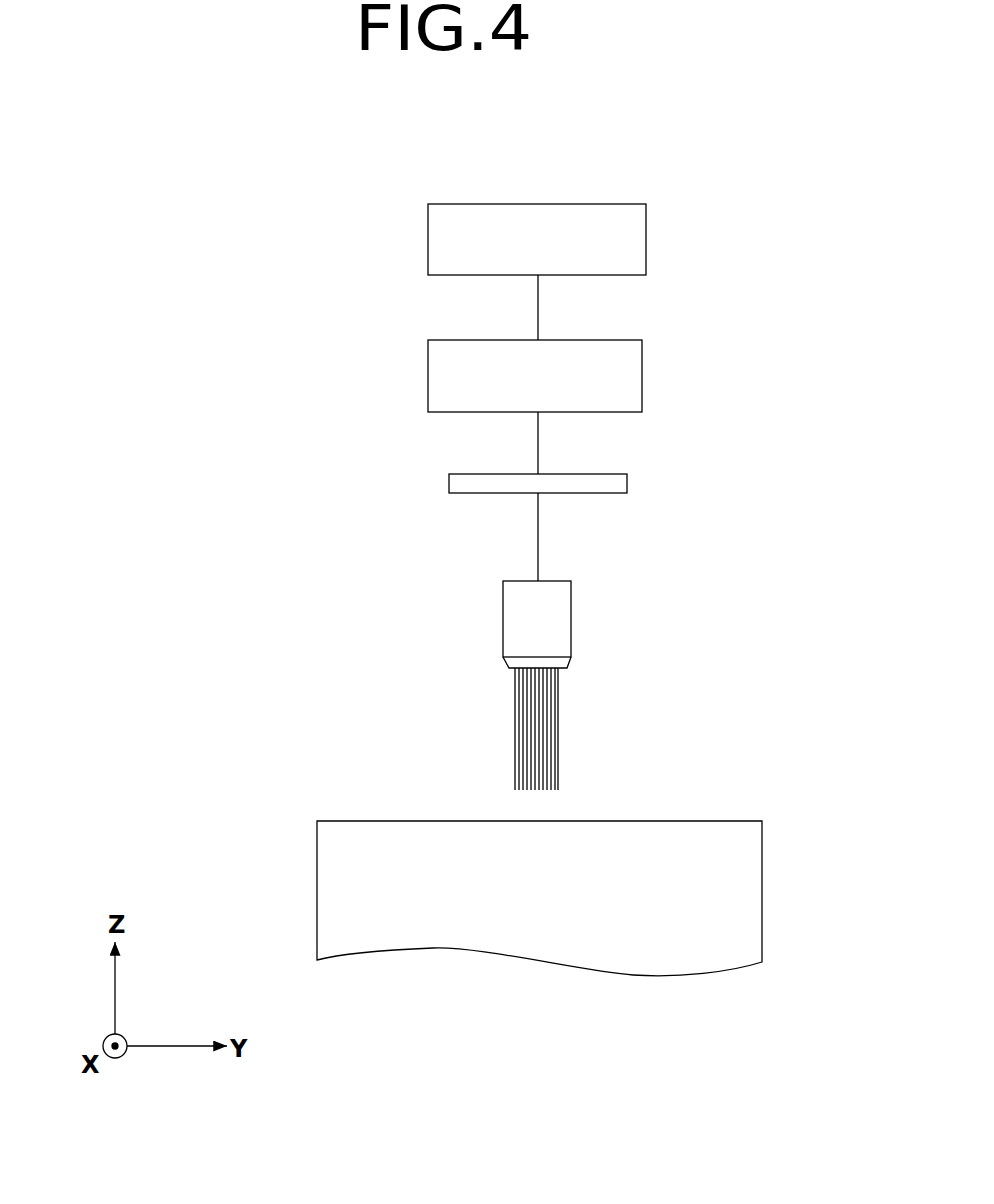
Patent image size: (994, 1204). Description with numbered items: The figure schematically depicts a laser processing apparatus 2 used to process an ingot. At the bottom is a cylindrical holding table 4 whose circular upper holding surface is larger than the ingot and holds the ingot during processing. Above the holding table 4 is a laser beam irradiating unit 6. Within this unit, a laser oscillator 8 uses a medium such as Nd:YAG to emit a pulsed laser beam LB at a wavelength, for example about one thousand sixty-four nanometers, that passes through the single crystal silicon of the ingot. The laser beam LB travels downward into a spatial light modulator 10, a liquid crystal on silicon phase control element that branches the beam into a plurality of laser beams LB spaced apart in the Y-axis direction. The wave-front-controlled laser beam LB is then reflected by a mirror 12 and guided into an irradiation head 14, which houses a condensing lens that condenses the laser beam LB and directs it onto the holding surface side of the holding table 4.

The laser processing apparatus 2 is at (243, 255).
The holding table 4 is at (722, 821).
The laser beam irradiating unit 6 is at (338, 507).
The laser oscillator 8 is at (646, 245).
The spatial light modulator 10 is at (642, 378).
The mirror 12 is at (627, 487).
The irradiation head 14 is at (571, 621).
The laser beam LB is at (555, 720).